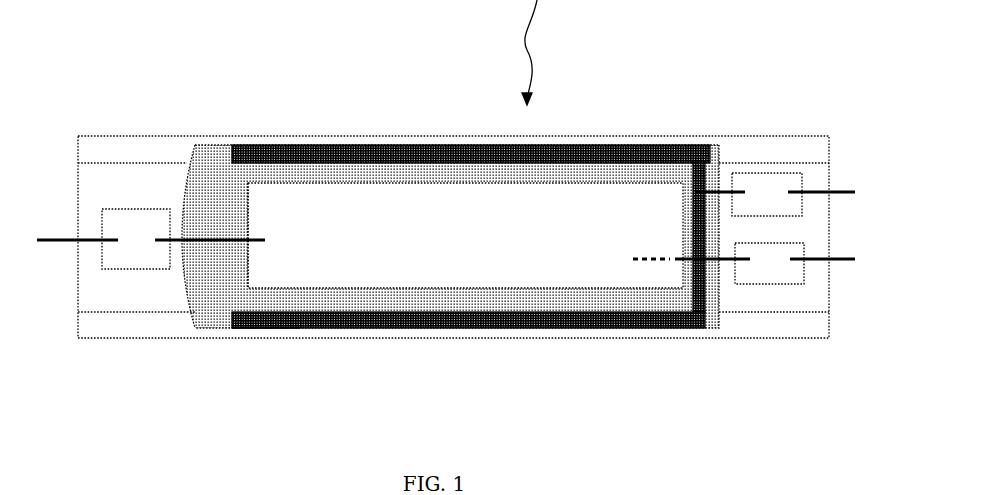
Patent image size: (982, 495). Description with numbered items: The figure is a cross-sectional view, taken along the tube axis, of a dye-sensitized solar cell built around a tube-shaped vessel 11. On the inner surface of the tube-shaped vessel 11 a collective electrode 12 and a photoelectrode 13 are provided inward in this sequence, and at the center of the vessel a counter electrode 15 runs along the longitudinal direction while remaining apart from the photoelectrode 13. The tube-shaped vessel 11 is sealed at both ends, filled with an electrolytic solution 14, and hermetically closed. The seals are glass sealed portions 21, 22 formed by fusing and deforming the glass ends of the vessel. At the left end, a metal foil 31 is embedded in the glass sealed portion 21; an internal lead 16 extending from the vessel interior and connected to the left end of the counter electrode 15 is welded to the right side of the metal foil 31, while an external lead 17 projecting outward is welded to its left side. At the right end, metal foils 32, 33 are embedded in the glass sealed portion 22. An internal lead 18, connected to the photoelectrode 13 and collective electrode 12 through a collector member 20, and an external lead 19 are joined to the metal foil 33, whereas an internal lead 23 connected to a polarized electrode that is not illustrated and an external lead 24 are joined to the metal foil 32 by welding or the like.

The tube-shaped vessel 11 is at (283, 134).
The collective electrode 12 is at (347, 328).
The photoelectrode 13 is at (597, 330).
The electrolytic solution 14 is at (217, 273).
The counter electrode 15 is at (270, 330).
The internal lead 16 is at (213, 237).
The external lead 17 is at (55, 243).
The internal lead 18 is at (714, 192).
The external lead 19 is at (837, 192).
The collector member 20 is at (703, 160).
The glass sealed portion 21 is at (143, 188).
The glass sealed portion 22 is at (813, 182).
The internal lead 23 is at (727, 262).
The external lead 24 is at (840, 263).
The metal foil 31 is at (138, 255).
The metal foil 32 is at (793, 270).
The metal foil 33 is at (772, 197).